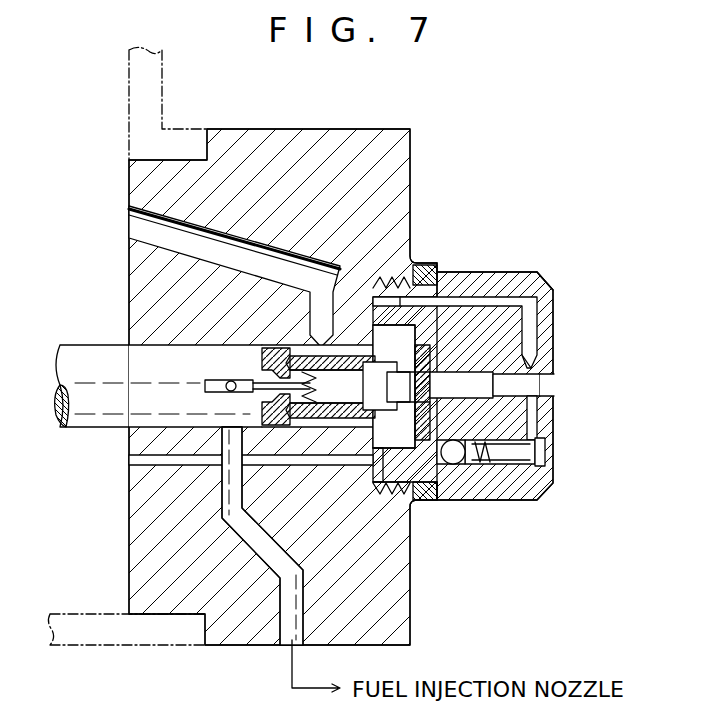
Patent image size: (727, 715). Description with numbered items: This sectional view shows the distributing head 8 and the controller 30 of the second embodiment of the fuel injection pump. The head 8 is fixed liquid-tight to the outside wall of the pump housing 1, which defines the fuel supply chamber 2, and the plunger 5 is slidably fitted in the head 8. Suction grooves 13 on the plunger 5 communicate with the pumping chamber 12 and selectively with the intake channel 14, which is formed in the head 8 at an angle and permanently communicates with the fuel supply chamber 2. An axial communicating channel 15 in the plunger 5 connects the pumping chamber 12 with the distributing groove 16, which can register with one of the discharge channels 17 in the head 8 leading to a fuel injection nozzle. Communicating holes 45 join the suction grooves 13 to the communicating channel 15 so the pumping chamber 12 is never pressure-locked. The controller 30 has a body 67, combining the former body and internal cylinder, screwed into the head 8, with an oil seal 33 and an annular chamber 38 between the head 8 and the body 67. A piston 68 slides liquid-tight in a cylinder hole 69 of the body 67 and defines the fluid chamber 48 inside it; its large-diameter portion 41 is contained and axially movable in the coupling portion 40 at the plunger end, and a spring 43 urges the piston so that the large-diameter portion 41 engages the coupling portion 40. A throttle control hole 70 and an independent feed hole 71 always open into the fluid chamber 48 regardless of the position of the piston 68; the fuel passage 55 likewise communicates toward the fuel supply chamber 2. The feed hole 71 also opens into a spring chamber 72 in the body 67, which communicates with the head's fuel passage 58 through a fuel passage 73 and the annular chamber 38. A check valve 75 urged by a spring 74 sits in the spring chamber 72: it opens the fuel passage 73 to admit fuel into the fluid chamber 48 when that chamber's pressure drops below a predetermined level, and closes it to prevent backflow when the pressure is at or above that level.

The pump housing 1 is at (163, 108).
The fuel supply chamber 2 is at (98, 572).
The plunger 5 is at (80, 428).
The distributing head 8 is at (334, 128).
The pumping chamber 12 is at (418, 415).
The suction grooves 13 is at (326, 408).
The intake channel 14 is at (238, 236).
The communicating channel 15 is at (266, 400).
The distributing groove 16 is at (204, 388).
The discharge channels 17 is at (258, 548).
The controller 30 is at (536, 256).
The oil seal 33 is at (426, 264).
The annular chamber 38 is at (370, 476).
The coupling portion 40 is at (398, 358).
The large-diameter portion 41 is at (426, 420).
The spring 43 is at (304, 408).
The communicating holes 45 is at (268, 352).
The fluid chamber 48 is at (536, 386).
The fuel passage 55 is at (538, 310).
The fuel passage 58 is at (126, 468).
The body 67 is at (546, 286).
The piston 68 is at (454, 374).
The cylinder hole 69 is at (478, 378).
The throttle control hole 70 is at (536, 366).
The feed hole 71 is at (540, 414).
The spring chamber 72 is at (540, 444).
The fuel passage 73 is at (390, 490).
The spring 74 is at (542, 462).
The check valve 75 is at (460, 466).